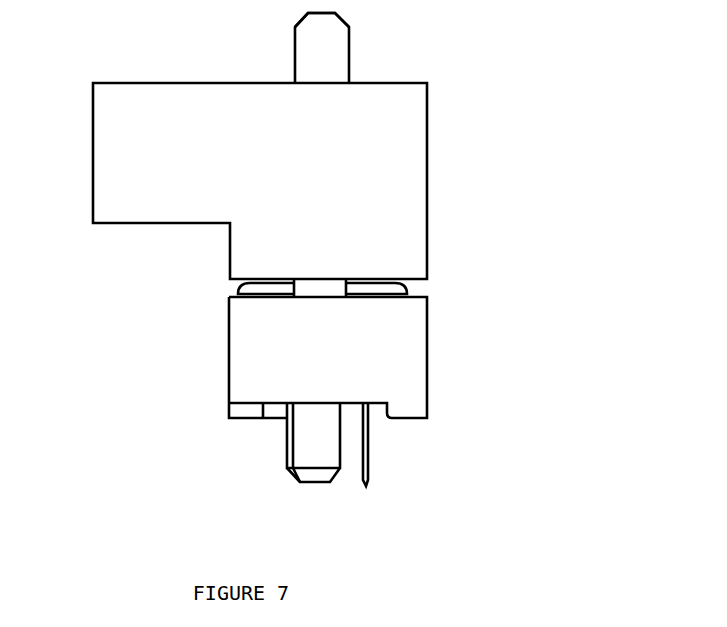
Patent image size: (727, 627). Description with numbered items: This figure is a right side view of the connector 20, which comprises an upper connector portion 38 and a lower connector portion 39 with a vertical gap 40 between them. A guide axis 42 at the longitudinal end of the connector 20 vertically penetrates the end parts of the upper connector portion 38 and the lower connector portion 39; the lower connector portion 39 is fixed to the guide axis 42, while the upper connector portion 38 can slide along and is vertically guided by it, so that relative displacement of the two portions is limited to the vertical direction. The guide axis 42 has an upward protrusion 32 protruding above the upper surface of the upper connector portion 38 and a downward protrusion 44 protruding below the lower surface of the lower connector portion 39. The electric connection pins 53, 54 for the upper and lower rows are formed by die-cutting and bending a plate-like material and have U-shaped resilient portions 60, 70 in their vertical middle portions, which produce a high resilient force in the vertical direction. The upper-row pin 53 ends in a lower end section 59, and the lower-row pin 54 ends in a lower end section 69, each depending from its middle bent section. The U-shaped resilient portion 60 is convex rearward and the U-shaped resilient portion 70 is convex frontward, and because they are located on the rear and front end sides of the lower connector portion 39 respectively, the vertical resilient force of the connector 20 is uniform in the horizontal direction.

The connector 20 is at (50, 150).
The upward protrusion 32 is at (295, 55).
The upper connector portion 38 is at (428, 138).
The lower connector portion 39 is at (428, 366).
The vertical gap 40 is at (237, 294).
The guide axis 42 is at (349, 58).
The downward protrusion 44 is at (315, 435).
The electric connection pin for the upper row 53 is at (368, 482).
The electric connection pin for the lower row 54 is at (287, 467).
The lower end section 59 is at (368, 441).
The U-shaped resilient portion 60 is at (408, 292).
The lower end section 69 is at (288, 441).
The U-shaped resilient portion 70 is at (238, 289).